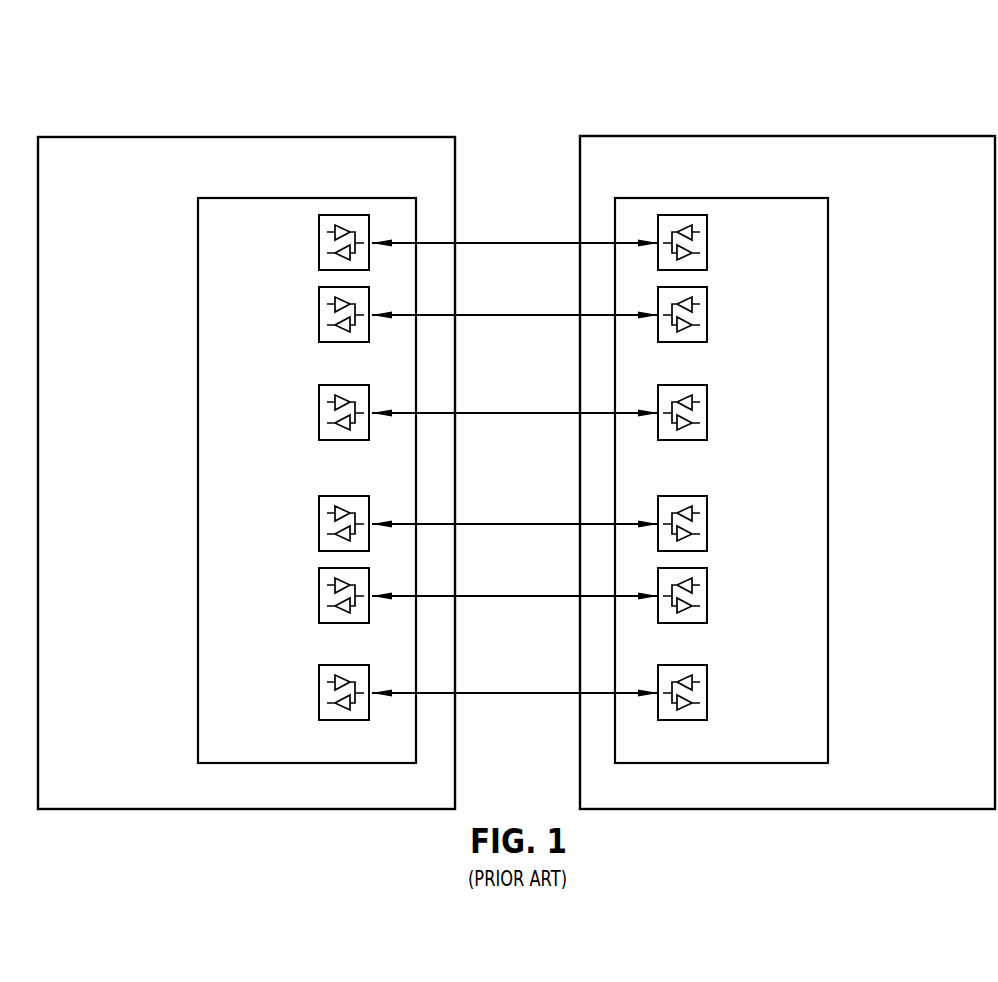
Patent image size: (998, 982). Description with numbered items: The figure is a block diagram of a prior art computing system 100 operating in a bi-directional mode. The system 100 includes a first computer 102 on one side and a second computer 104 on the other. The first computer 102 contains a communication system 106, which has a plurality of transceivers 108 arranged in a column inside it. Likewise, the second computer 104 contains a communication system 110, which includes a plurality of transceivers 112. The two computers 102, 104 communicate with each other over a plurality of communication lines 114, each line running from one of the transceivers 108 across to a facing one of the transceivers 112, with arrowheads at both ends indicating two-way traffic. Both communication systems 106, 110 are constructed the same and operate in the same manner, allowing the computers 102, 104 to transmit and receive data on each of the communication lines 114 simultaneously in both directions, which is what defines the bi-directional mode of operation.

The computing system 100 is at (948, 90).
The first computer 102 is at (243, 137).
The second computer 104 is at (783, 136).
The communication system 106 is at (304, 198).
The transceivers 108 is at (268, 304).
The communication system 110 is at (719, 198).
The transceivers 112 is at (764, 304).
The communication lines 114 is at (515, 208).